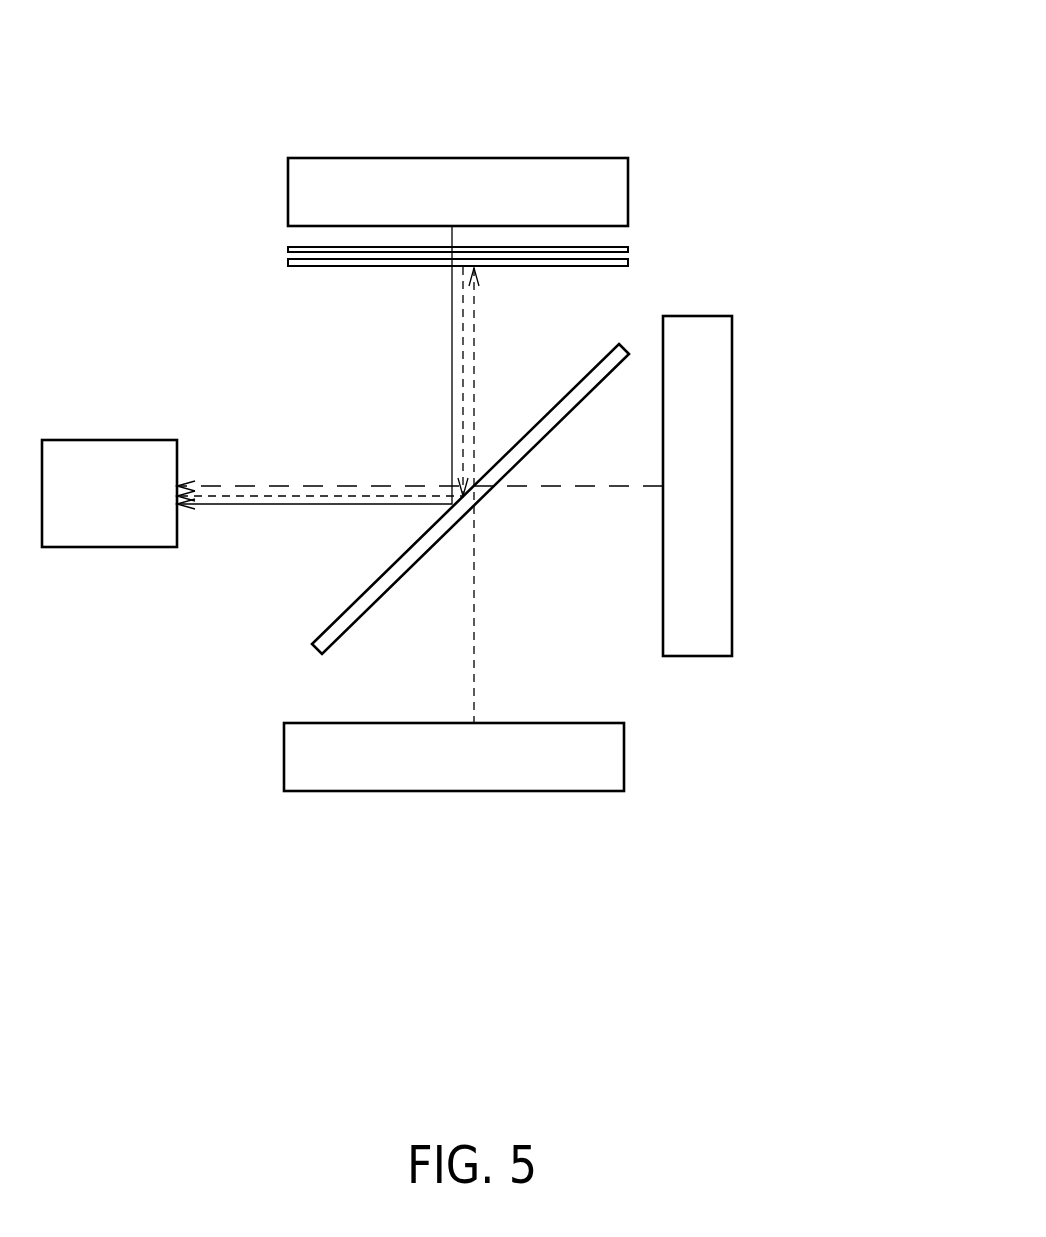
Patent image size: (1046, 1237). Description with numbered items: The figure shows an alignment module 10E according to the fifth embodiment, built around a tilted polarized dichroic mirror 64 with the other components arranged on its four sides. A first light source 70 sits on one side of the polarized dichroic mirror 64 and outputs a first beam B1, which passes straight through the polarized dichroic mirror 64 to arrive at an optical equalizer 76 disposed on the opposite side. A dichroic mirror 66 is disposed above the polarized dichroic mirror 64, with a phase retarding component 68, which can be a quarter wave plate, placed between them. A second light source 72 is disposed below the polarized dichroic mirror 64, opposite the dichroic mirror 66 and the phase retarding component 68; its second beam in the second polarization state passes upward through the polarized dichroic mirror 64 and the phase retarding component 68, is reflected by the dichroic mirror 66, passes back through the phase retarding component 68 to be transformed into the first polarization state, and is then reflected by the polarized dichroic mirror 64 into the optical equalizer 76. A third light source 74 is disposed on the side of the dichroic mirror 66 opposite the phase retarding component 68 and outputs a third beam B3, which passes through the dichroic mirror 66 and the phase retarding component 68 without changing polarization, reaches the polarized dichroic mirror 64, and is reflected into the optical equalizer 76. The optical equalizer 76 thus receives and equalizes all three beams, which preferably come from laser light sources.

The alignment module 10E is at (779, 62).
The polarized dichroic mirror 64 is at (367, 620).
The dichroic mirror 66 is at (630, 247).
The phase retarding component 68 is at (630, 263).
The first light source 70 is at (732, 544).
The second light source 72 is at (505, 791).
The third light source 74 is at (548, 158).
The optical equalizer 76 is at (103, 548).
The first beam B1 is at (578, 485).
The third beam B3 is at (452, 347).